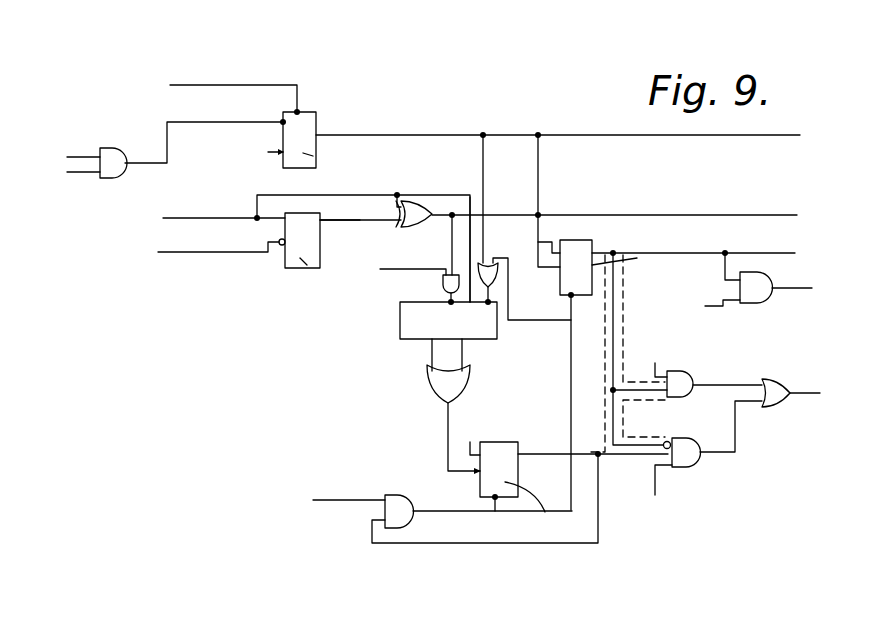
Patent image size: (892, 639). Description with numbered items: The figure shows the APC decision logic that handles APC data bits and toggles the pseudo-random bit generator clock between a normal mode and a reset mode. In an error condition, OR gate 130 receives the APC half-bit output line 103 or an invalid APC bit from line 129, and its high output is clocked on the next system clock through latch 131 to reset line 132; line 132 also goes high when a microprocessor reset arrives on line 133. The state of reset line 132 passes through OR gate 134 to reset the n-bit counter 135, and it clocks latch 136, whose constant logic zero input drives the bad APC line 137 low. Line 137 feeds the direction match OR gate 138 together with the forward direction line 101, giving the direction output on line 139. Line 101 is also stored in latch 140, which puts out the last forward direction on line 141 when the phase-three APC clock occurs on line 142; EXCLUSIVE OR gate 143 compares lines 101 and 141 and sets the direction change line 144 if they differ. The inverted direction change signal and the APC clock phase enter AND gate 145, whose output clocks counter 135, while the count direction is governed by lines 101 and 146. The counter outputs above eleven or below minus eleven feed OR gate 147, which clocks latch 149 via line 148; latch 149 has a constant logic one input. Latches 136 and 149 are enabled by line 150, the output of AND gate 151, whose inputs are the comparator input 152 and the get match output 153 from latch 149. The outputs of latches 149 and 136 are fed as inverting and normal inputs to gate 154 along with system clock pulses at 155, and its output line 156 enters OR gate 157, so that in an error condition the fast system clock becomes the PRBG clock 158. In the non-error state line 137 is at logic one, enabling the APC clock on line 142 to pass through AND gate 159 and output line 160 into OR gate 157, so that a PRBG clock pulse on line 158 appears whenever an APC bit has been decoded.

The forward direction line 101 is at (182, 218).
The APC half-bit output line 103 is at (70, 157).
The invalid APC bit line 129 is at (90, 172).
The OR gate 130 is at (118, 170).
The latch 131 is at (316, 112).
The reset line 132 is at (398, 135).
The microprocessor reset line 133 is at (238, 78).
The OR gate 134 is at (490, 288).
The n-bit counter 135 is at (400, 325).
The latch 136 is at (578, 240).
The bad APC line 137 is at (645, 253).
The direction match OR gate 138 is at (760, 303).
The direction output line 139 is at (805, 289).
The latch 140 is at (287, 258).
The last forward direction line 141 is at (335, 221).
The APC clock phase line 142 is at (183, 254).
The EXCLUSIVE OR gate 143 is at (421, 199).
The direction change line 144 is at (745, 200).
The AND gate 145 is at (443, 290).
The count direction line 146 is at (458, 197).
The OR gate 147 is at (430, 383).
The latch clock line 148 is at (447, 431).
The latch 149 is at (498, 442).
The latch enable line 150 is at (571, 385).
The AND gate 151 is at (405, 479).
The comparator input line 152 is at (350, 499).
The get match output line 153 is at (422, 548).
The gate 154 is at (688, 467).
The system clock input 155 is at (655, 480).
The output line 156 is at (737, 432).
The OR gate 157 is at (785, 405).
The PRBG clock 158 is at (810, 375).
The AND gate 159 is at (676, 397).
The output line 160 is at (727, 381).